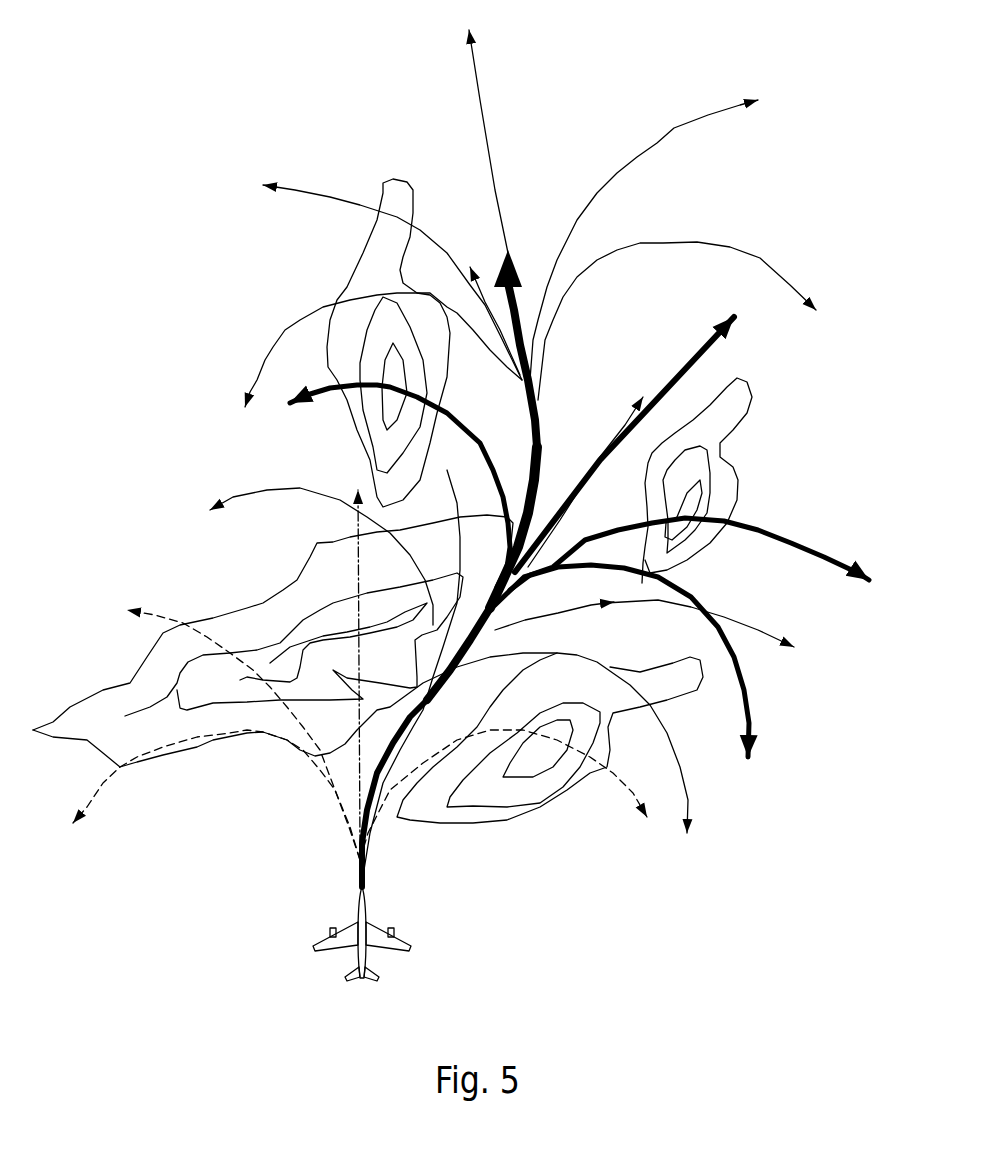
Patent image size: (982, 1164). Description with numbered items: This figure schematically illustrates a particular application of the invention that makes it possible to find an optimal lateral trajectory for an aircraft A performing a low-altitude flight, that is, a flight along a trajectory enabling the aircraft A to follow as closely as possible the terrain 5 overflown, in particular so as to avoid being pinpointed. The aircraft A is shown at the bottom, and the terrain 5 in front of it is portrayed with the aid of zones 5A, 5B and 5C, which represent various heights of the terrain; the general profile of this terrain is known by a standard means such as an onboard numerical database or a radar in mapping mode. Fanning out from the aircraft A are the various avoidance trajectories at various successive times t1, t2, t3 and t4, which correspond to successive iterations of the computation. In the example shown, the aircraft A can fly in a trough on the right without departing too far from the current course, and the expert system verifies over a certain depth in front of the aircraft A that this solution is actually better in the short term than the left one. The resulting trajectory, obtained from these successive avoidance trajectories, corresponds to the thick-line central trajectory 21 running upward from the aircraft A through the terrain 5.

The terrain 5 is at (402, 170).
The zone 5A is at (73, 707).
The zone 5B is at (278, 653).
The zone 5C is at (317, 607).
The central trajectory 21 is at (550, 430).
The time t1 is at (290, 768).
The time t2 is at (352, 520).
The time t3 is at (821, 567).
The time t4 is at (741, 240).
The aircraft A is at (367, 947).